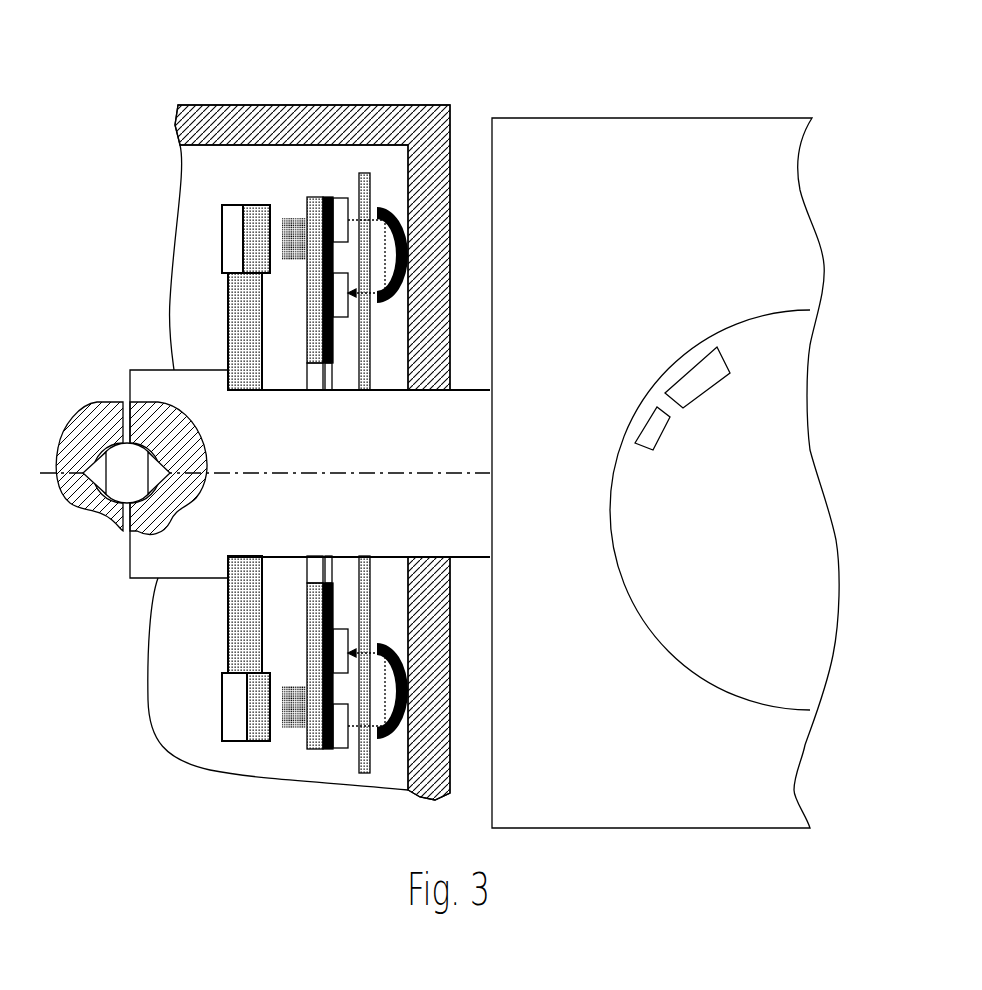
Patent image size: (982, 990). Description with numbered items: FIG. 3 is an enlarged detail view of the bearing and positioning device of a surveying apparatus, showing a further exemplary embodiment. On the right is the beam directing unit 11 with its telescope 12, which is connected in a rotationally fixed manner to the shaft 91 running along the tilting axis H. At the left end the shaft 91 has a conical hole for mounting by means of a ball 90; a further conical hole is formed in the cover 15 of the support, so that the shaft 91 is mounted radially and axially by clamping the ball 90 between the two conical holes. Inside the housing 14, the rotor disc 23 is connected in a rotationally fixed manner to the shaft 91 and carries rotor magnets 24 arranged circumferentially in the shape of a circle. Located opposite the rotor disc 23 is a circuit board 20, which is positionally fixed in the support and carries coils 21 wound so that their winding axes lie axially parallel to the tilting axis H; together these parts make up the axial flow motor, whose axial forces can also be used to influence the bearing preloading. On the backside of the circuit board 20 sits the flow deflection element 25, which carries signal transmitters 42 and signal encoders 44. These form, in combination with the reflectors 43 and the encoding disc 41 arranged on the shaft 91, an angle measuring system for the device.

The beam directing unit 11 is at (614, 163).
The telescope 12 is at (770, 390).
The housing 14 is at (428, 105).
The cover 15 is at (68, 420).
The circuit board 20 is at (318, 755).
The coils 21 is at (290, 733).
The rotor disc 23 is at (228, 648).
The rotor magnets 24 is at (245, 715).
The flow deflection element 25 is at (328, 755).
The encoding disc 41 is at (365, 173).
The signal transmitters 42 is at (339, 208).
The reflectors 43 is at (400, 304).
The signal encoders 44 is at (343, 386).
The ball 90 is at (112, 487).
The shaft 91 is at (163, 387).
The tilting axis H is at (288, 474).